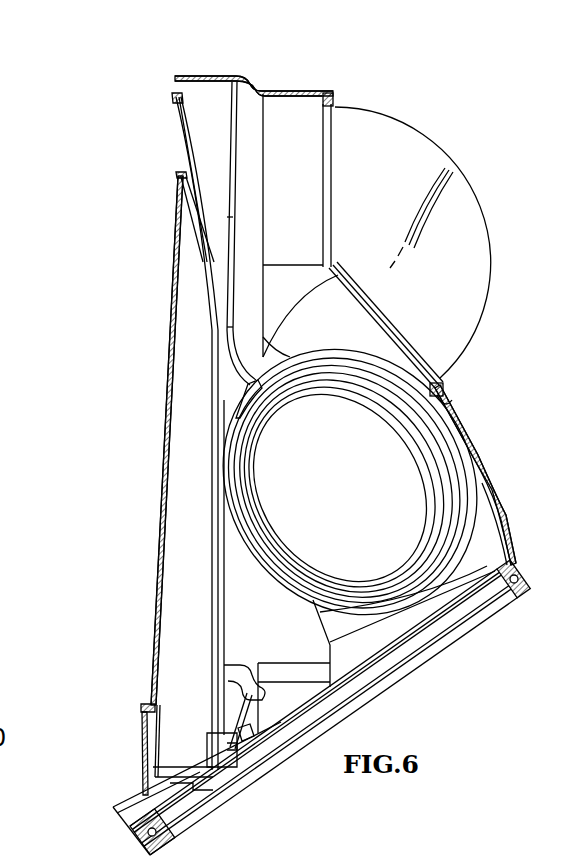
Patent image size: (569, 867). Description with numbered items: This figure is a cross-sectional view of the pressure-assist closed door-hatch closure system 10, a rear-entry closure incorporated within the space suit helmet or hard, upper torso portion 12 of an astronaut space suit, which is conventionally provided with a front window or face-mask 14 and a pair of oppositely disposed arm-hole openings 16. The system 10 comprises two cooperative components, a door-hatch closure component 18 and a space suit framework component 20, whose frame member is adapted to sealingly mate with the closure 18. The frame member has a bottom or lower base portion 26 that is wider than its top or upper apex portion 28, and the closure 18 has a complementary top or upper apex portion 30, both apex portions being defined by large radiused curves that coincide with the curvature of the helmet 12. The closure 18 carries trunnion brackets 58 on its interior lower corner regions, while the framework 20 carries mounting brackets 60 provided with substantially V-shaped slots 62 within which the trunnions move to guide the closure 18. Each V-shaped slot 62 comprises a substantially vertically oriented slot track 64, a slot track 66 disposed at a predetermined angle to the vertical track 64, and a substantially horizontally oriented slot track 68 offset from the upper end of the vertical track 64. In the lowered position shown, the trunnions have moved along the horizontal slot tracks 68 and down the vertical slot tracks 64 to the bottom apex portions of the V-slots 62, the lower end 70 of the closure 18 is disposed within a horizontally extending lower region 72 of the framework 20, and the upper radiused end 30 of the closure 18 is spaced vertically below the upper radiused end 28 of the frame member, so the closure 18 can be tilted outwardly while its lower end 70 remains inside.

The pressure-assist closed door-hatch closure system 10 is at (492, 140).
The space suit helmet or hard, upper torso portion 12 is at (487, 616).
The front window or face-mask 14 is at (492, 255).
The arm-hole opening 16 is at (354, 487).
The door-hatch closure component 18 is at (165, 415).
The space suit framework component 20 is at (128, 790).
The bottom or lower base portion 26 is at (150, 706).
The top or upper apex portion 28 is at (175, 97).
The top or upper apex portion 30 is at (180, 175).
The trunnion bracket 58 is at (207, 750).
The mounting bracket 60 is at (260, 663).
The substantially V-shaped slot 62 is at (247, 733).
The substantially vertically oriented slot track 64 is at (233, 690).
The slot track 66 is at (257, 700).
The substantially horizontally oriented slot track 68 is at (227, 680).
The lower end 70 is at (162, 735).
The horizontally extending lower region 72 is at (146, 742).